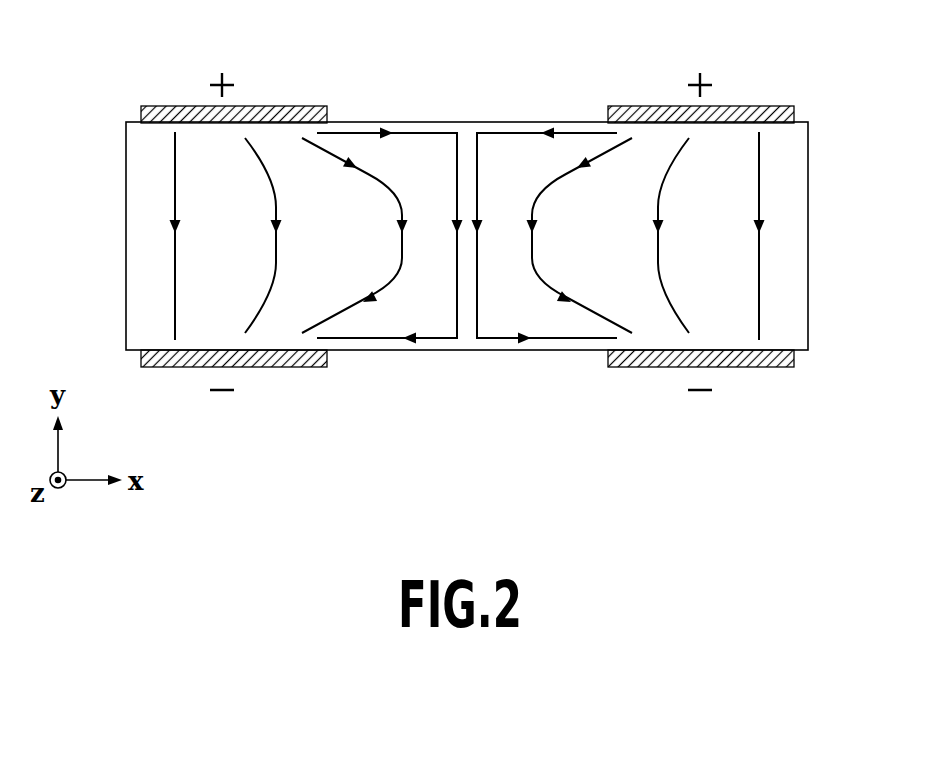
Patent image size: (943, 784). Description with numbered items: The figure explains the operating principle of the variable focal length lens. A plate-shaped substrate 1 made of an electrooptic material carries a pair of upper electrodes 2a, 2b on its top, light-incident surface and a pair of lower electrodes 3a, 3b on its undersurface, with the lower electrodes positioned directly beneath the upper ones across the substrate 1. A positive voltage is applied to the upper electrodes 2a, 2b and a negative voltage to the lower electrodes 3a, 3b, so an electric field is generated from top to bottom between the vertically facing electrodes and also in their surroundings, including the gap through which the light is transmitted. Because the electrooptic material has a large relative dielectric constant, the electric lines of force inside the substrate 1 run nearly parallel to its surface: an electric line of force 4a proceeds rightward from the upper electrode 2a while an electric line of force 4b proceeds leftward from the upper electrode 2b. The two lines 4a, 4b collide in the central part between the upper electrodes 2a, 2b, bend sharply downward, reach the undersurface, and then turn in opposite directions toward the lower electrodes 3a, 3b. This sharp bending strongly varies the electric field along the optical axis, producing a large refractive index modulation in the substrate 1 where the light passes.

The substrate 1 is at (795, 232).
The upper electrode 2a is at (182, 106).
The upper electrode 2b is at (766, 106).
The lower electrode 3a is at (175, 367).
The lower electrode 3b is at (762, 367).
The electric line of force 4a is at (361, 133).
The electric line of force 4b is at (573, 133).